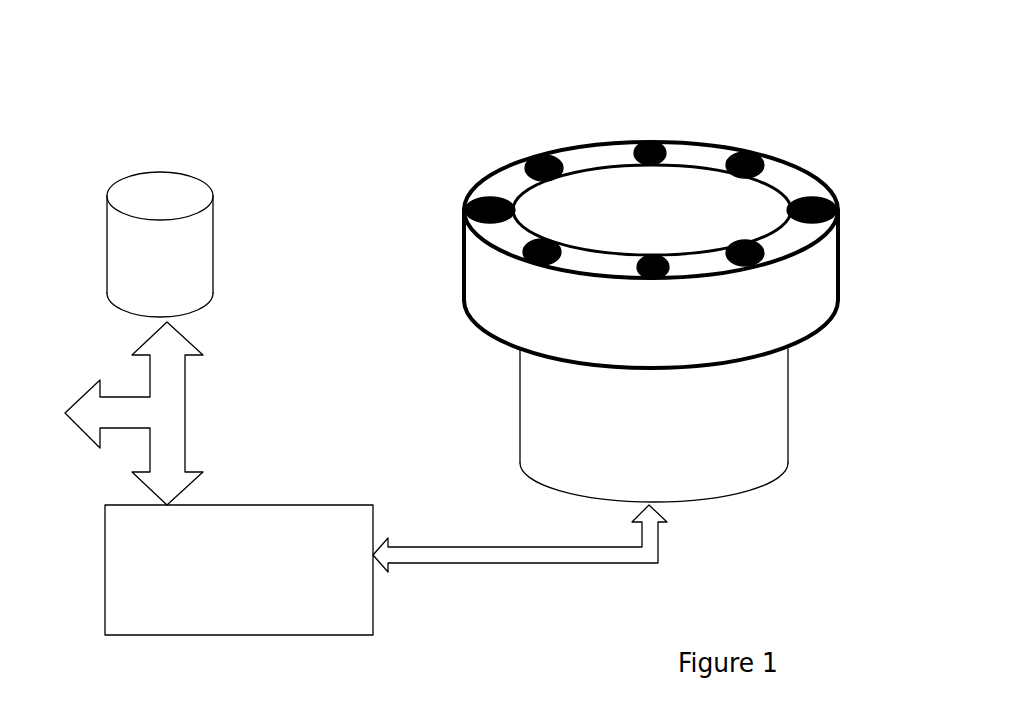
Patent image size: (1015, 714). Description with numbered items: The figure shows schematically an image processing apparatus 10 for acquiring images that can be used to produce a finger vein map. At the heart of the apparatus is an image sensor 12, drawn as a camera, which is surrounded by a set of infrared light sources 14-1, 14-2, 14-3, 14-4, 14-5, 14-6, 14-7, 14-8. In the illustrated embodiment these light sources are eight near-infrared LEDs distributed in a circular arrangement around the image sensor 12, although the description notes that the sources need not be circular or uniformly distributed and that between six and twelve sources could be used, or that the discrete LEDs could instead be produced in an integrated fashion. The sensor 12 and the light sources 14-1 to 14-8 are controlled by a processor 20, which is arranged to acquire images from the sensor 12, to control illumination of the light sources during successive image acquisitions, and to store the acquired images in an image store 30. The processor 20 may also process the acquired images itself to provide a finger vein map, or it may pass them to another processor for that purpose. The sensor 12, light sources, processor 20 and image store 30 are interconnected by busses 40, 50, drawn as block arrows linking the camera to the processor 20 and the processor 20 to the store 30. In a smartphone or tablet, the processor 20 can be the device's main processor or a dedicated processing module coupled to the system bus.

The image processing apparatus 10 is at (815, 513).
The image sensor 12 is at (540, 202).
The IR light source 14-1 is at (813, 207).
The IR light source 14-2 is at (750, 153).
The IR light source 14-3 is at (653, 143).
The IR light source 14-4 is at (530, 157).
The IR light source 14-5 is at (466, 214).
The IR light source 14-6 is at (522, 258).
The IR light source 14-7 is at (655, 278).
The IR light source 14-8 is at (770, 263).
The processor 20 is at (239, 558).
The image store 30 is at (162, 233).
The bus 40 is at (520, 549).
The bus 50 is at (141, 413).